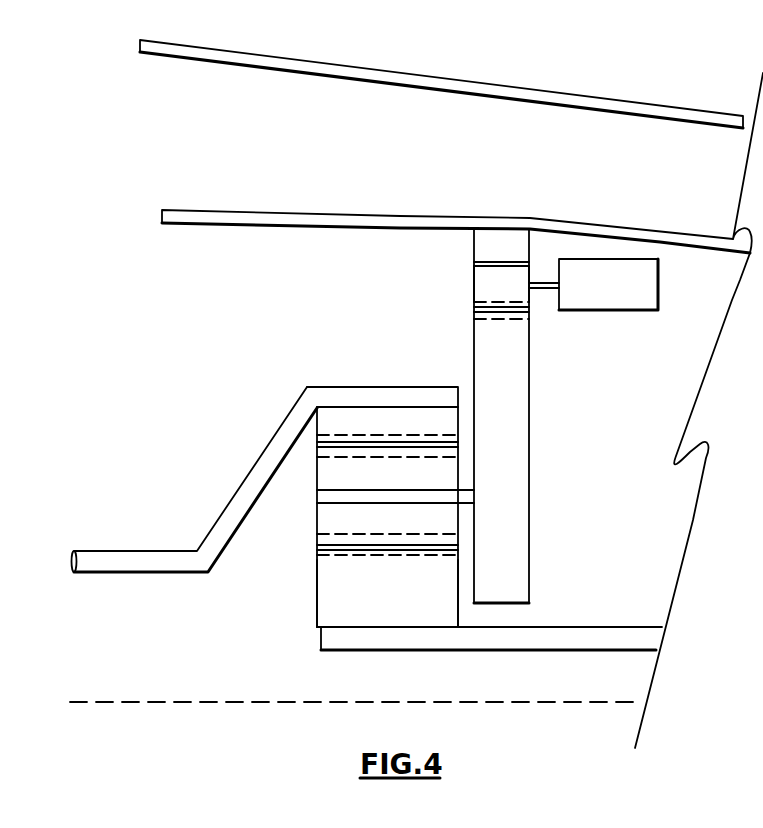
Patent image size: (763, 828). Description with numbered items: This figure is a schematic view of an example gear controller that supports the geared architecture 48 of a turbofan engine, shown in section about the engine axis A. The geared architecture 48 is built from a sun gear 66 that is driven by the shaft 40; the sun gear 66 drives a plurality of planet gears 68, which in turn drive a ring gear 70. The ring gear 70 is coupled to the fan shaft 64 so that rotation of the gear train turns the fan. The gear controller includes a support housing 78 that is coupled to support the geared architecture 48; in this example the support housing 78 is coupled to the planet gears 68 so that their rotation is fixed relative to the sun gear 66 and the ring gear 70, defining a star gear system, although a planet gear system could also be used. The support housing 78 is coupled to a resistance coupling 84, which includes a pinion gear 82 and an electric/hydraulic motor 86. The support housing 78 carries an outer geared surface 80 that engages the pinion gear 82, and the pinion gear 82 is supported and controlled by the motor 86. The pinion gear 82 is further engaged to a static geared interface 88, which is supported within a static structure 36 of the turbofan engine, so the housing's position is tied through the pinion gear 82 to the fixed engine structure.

The static structure 36 is at (424, 219).
The shaft 40 is at (573, 635).
The geared architecture 48 is at (333, 542).
The fan shaft 64 is at (237, 490).
The sun gear 66 is at (333, 585).
The planet gears 68 is at (325, 470).
The ring gear 70 is at (325, 423).
The support housing 78 is at (503, 415).
The outer geared surface 80 is at (461, 319).
The pinion gear 82 is at (482, 278).
The resistance coupling 84 is at (559, 342).
The electric/hydraulic motor 86 is at (618, 300).
The static geared interface 88 is at (482, 238).
The section line A is at (125, 703).